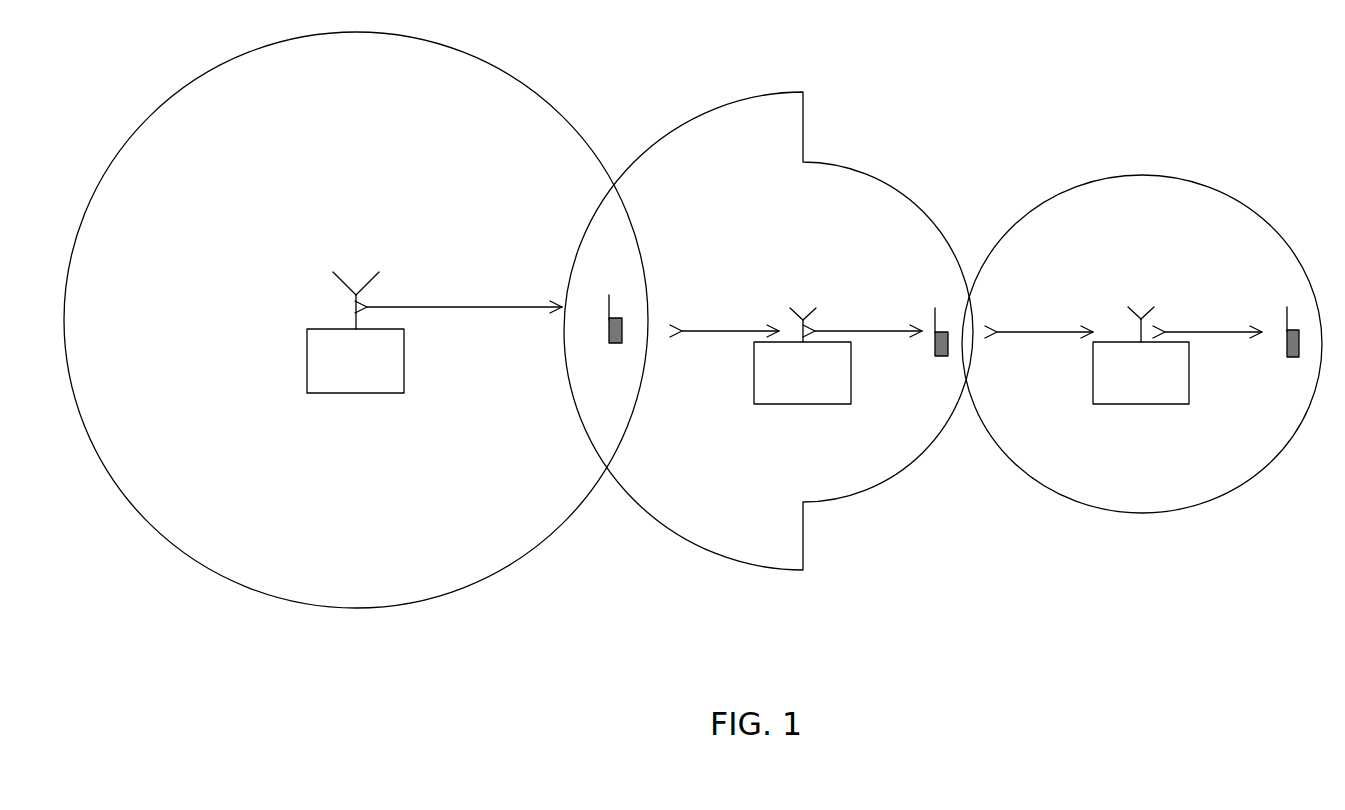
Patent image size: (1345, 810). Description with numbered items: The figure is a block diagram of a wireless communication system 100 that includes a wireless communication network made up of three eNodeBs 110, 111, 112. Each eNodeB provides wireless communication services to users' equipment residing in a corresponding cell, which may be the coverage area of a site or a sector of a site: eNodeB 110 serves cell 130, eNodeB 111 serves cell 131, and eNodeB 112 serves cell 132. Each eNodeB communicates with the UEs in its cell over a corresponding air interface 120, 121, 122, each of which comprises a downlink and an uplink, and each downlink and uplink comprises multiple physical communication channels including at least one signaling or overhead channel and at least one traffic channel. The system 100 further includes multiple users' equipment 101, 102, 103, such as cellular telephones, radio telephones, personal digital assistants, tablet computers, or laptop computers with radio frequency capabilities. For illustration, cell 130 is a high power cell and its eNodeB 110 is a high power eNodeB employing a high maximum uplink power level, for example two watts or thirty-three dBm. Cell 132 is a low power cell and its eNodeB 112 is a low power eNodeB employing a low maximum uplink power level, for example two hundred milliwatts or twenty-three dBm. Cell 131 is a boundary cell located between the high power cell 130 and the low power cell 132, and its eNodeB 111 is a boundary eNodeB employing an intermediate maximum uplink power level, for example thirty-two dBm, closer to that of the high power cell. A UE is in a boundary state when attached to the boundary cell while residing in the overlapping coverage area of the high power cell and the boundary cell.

The wireless communication system 100 is at (546, 647).
The user equipment 101 is at (609, 330).
The user equipment 102 is at (941, 344).
The user equipment 103 is at (1285, 342).
The eNodeB 110 is at (307, 367).
The eNodeB 111 is at (802, 405).
The eNodeB 112 is at (1153, 406).
The air interface 120 is at (478, 306).
The air interface 121 is at (718, 333).
The air interface 122 is at (1033, 332).
The cell 130 is at (355, 175).
The cell 131 is at (828, 233).
The cell 132 is at (1165, 245).